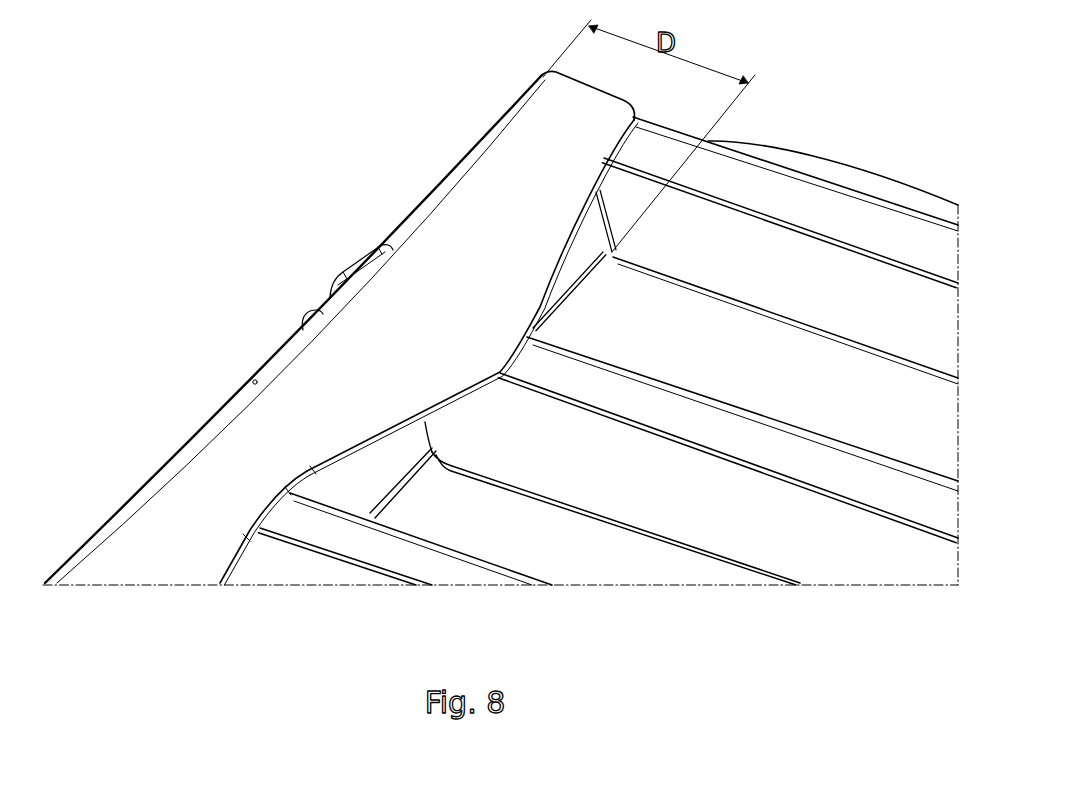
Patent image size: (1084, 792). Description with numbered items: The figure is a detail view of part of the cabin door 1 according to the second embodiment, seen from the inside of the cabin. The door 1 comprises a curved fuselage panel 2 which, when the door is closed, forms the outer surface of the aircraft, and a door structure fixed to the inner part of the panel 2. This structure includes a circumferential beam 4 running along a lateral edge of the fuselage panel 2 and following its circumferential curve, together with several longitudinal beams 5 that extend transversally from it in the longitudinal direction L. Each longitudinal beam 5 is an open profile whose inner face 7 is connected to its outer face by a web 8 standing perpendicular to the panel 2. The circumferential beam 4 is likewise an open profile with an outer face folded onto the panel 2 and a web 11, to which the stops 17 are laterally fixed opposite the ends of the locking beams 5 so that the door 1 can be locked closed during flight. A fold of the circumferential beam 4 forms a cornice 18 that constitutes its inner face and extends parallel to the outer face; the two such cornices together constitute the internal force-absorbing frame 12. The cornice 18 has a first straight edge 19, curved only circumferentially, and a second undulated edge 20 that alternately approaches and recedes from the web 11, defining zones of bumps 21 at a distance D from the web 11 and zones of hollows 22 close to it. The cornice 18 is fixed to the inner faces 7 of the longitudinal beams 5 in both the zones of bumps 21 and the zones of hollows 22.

The cabin door 1 is at (233, 188).
The fuselage panel 2 is at (788, 158).
The circumferential beam 4 is at (413, 477).
The longitudinal beam 5 is at (695, 280).
The inner face 7 is at (867, 228).
The web 8 is at (730, 207).
The web 11 is at (575, 255).
The internal force-absorbing frame 12 is at (256, 381).
The stop 17 is at (340, 270).
The cornice 18 is at (513, 200).
The straight edge 19 is at (157, 480).
The undulated edge 20 is at (440, 410).
The zone of bumps 21 is at (500, 343).
The zone of hollows 22 is at (608, 137).